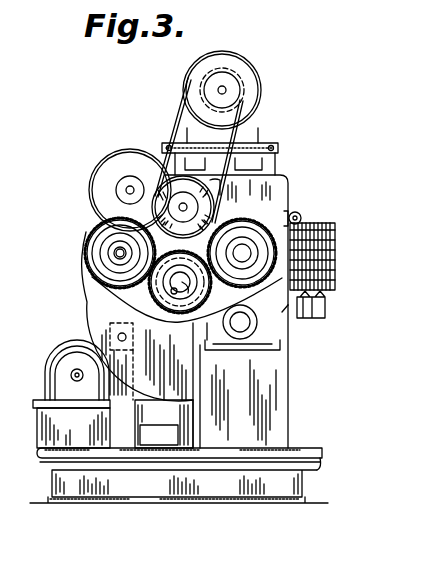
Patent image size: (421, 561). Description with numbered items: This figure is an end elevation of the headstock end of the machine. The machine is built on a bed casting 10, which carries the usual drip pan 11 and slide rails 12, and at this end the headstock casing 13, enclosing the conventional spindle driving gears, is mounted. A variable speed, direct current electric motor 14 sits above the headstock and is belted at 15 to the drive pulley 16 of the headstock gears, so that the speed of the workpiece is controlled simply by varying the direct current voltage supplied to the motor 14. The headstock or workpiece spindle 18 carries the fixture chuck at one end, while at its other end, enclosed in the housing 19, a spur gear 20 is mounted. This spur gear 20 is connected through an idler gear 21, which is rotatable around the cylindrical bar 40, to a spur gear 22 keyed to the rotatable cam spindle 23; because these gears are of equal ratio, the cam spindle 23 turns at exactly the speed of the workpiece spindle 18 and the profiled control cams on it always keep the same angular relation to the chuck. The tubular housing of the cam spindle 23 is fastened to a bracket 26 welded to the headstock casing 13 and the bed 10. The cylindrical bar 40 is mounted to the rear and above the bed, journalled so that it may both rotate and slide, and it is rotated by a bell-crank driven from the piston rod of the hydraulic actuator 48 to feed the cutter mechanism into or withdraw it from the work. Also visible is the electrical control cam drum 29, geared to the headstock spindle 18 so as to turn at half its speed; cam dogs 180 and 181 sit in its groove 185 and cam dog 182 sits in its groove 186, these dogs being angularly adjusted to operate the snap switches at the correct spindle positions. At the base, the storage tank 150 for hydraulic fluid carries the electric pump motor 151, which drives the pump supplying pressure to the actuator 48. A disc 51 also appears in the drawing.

The bed casting 10 is at (270, 412).
The drip pan 11 is at (300, 490).
The slide rails 12 is at (290, 356).
The headstock casing 13 is at (242, 253).
The electric motor 14 is at (247, 84).
The belt 15 is at (181, 126).
The drive pulley 16 is at (160, 213).
The headstock spindle 18 is at (305, 222).
The housing 19 is at (283, 330).
The spur gear 20 is at (258, 228).
The idler gear 21 is at (148, 288).
The spur gear 22 is at (93, 237).
The cam spindle 23 is at (118, 253).
The bracket 26 is at (99, 304).
The electrical control cam drum 29 is at (333, 278).
The cylindrical bar 40 is at (190, 290).
The hydraulic actuator 48 is at (117, 440).
The disc 51 is at (110, 163).
The storage tank 150 is at (78, 440).
The electric pump motor 151 is at (70, 362).
The cam dog 180 is at (330, 290).
The cam dog 181 is at (318, 222).
The cam dog 182 is at (330, 235).
The groove 185 is at (333, 243).
The groove 186 is at (330, 256).